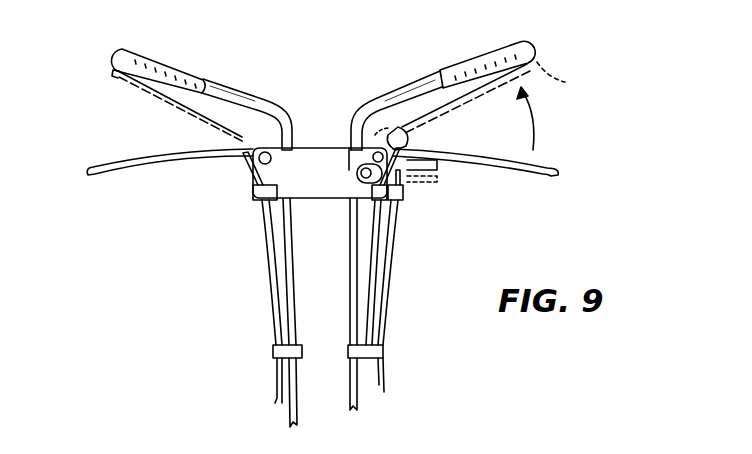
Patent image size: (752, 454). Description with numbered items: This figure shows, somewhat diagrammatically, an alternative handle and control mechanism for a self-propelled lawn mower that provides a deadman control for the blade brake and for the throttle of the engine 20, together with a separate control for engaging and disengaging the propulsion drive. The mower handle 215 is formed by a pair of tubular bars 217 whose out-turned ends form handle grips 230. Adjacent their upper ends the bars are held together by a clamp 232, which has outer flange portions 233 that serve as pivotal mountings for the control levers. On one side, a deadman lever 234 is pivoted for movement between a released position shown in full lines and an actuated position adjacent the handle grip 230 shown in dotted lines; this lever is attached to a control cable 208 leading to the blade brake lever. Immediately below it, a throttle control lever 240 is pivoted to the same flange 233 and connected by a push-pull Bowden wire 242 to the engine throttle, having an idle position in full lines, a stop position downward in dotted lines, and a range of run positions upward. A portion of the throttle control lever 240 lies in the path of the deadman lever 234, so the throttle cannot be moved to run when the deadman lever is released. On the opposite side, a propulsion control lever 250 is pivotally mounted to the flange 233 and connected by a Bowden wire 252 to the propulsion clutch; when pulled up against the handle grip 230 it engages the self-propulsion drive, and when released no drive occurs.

The engine 20 is at (330, 275).
The control cable 208 is at (404, 135).
The mower handle 215 is at (364, 100).
The tubular bars 217 is at (293, 280).
The handle grips 230 is at (200, 56).
The clamp 232 is at (339, 186).
The outer flange portions 233 is at (297, 157).
The deadman lever 234 is at (553, 166).
The throttle control lever 240 is at (440, 168).
The push-pull Bowden wire 242 is at (413, 183).
The propulsion control lever 250 is at (147, 162).
The Bowden wire 252 is at (257, 181).